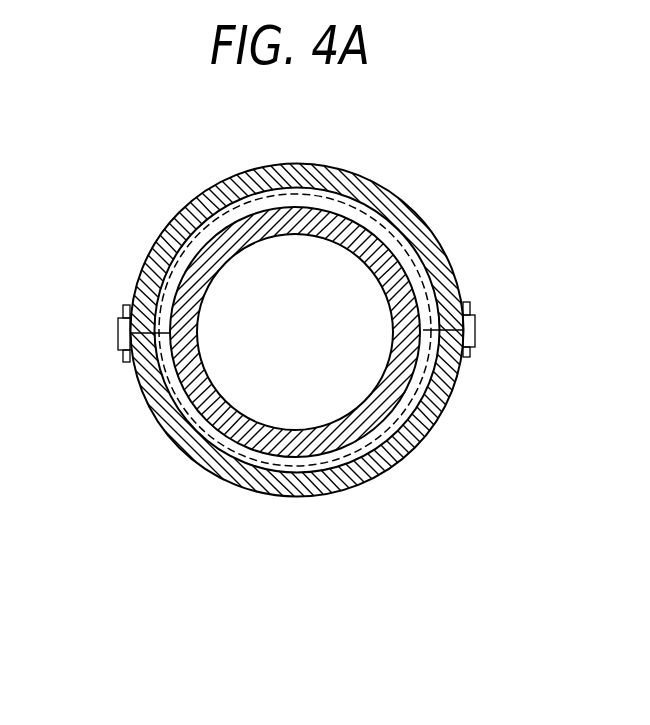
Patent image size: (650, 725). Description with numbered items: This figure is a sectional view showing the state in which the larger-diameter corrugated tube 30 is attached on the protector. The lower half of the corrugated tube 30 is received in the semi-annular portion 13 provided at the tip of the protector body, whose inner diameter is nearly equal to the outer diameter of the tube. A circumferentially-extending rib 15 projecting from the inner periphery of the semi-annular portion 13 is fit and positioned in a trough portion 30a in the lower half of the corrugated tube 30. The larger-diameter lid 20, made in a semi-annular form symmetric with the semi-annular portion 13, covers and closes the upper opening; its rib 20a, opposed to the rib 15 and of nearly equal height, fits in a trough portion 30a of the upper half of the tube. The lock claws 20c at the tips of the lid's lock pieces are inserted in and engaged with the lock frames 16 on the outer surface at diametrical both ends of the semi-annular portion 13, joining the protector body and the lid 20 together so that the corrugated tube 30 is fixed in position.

The semi-annular portion 13 is at (293, 344).
The rib 15 is at (436, 384).
The lock frame 16 is at (118, 337).
The larger-diameter lid 20 is at (293, 330).
The rib 20a is at (432, 270).
The lock claw 20c is at (254, 379).
The larger-diameter corrugated tube 30 is at (351, 290).
The trough portion 30a is at (413, 243).